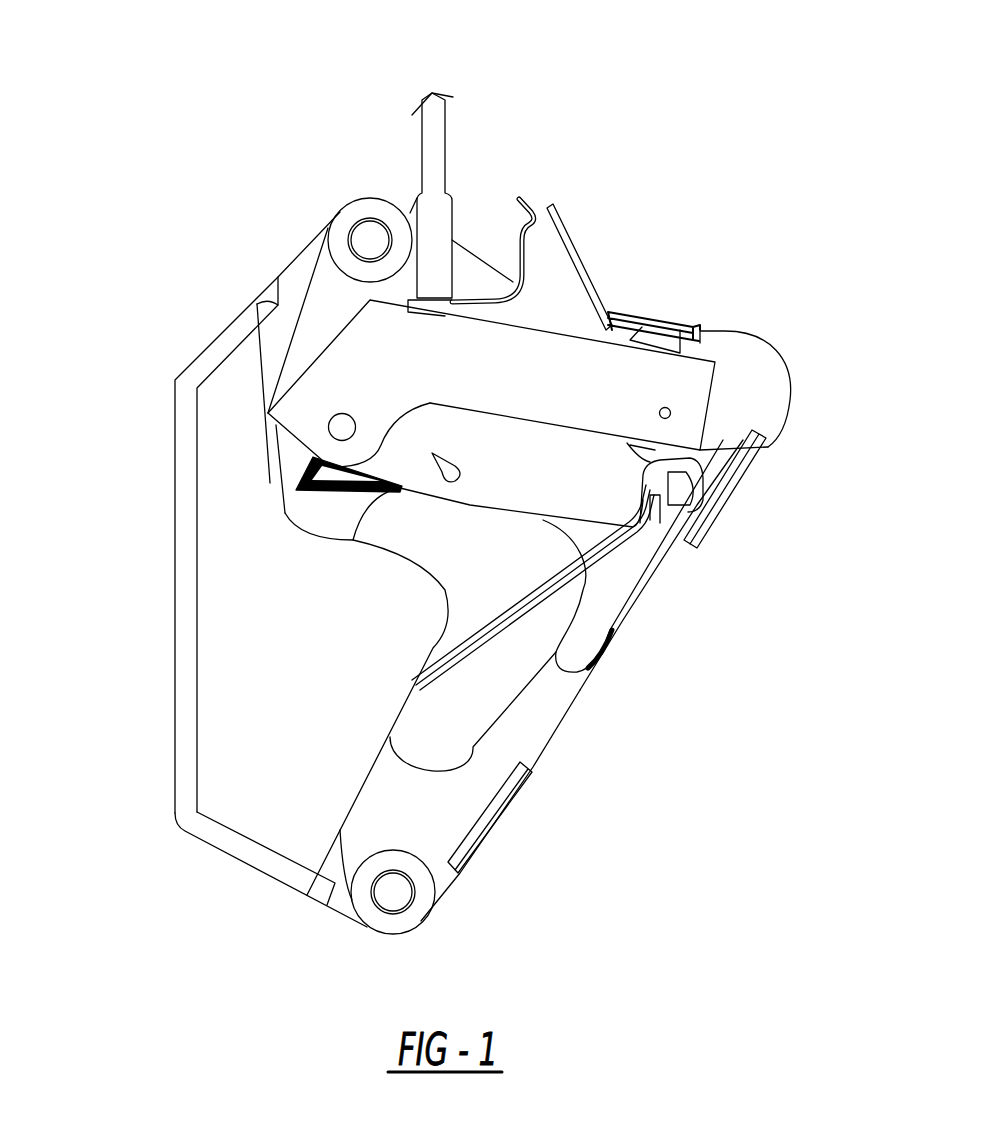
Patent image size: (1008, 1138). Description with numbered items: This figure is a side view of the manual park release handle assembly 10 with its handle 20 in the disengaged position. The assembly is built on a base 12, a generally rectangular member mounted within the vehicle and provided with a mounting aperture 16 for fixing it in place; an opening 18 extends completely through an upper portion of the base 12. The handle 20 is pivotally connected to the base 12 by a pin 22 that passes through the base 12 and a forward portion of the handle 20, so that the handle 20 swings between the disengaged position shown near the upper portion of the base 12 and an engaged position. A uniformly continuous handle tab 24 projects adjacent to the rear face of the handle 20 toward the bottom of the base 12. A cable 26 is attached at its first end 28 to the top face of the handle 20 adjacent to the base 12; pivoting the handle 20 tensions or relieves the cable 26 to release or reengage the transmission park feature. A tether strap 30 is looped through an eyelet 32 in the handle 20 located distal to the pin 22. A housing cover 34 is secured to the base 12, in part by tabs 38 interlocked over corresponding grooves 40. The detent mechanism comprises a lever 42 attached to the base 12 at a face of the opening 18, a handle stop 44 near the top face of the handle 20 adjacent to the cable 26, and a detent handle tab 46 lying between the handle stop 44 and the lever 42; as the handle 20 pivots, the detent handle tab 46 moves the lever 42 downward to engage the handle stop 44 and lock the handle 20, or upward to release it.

The manual park release handle assembly 10 is at (762, 107).
The base 12 is at (787, 350).
The mounting aperture 16 is at (369, 235).
The opening 18 is at (680, 323).
The handle 20 is at (580, 250).
The pin 22 is at (328, 426).
The handle tab 24 is at (628, 615).
The cable 26 is at (455, 110).
The first end 28 is at (453, 182).
The tether strap 30 is at (505, 640).
The eyelet 32 is at (695, 504).
The housing cover 34 is at (175, 605).
The tab 38 is at (503, 825).
The groove 40 is at (537, 770).
The lever 42 is at (640, 449).
The handle stop 44 is at (540, 190).
The detent handle tab 46 is at (637, 311).